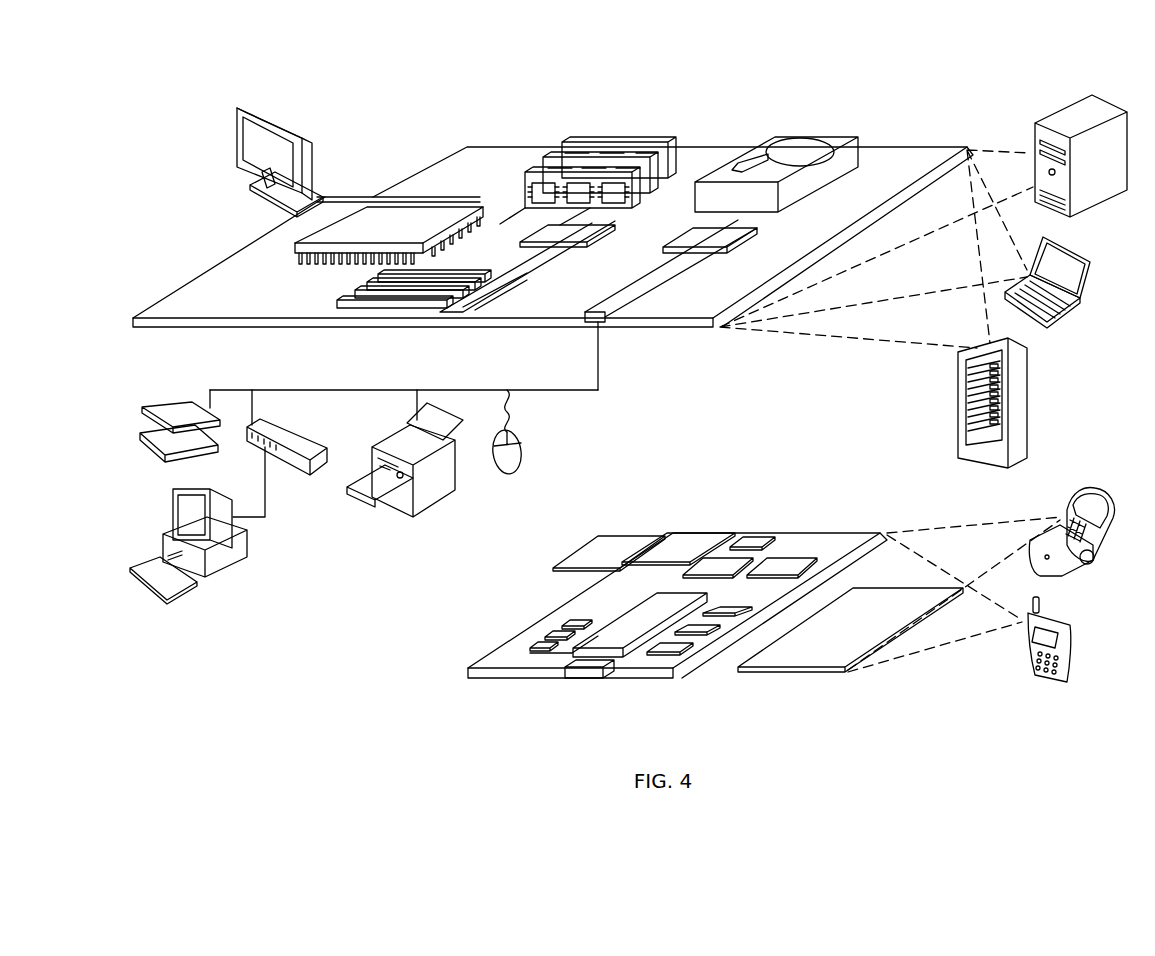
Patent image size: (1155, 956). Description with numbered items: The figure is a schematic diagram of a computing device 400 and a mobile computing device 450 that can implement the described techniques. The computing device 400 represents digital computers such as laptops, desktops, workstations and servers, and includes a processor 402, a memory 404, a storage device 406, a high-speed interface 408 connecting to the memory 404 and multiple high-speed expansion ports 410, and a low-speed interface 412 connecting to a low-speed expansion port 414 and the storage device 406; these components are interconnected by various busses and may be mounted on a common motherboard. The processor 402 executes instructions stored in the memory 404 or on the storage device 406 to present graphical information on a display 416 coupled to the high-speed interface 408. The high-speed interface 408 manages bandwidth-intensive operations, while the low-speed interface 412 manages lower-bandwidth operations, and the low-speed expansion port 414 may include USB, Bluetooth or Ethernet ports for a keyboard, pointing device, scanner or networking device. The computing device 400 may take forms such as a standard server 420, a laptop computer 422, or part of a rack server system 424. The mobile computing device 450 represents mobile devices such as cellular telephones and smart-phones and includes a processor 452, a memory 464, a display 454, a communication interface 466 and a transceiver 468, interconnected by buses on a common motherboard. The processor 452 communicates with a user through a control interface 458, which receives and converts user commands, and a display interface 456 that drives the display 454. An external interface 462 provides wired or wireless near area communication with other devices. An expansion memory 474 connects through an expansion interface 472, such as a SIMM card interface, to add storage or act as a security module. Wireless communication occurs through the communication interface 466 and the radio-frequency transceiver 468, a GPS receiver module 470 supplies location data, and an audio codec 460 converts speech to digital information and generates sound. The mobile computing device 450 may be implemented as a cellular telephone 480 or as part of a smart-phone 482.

The computing device 400 is at (400, 118).
The processor 402 is at (300, 247).
The memory 404 is at (572, 148).
The storage device 406 is at (765, 136).
The high-speed interface 408 is at (547, 232).
The high-speed expansion ports 410 is at (337, 302).
The low-speed interface 412 is at (695, 236).
The low-speed expansion port 414 is at (610, 322).
The display 416 is at (240, 106).
The standard server 420 is at (1036, 130).
The laptop computer 422 is at (1092, 262).
The rack server system 424 is at (958, 422).
The mobile computing device 450 is at (448, 688).
The processor 452 is at (620, 642).
The display 454 is at (818, 658).
The display interface 456 is at (675, 648).
The control interface 458 is at (705, 628).
The audio codec 460 is at (724, 615).
The external interface 462 is at (588, 672).
The memory 464 is at (548, 635).
The communication interface 466 is at (717, 563).
The transceiver 468 is at (783, 563).
The GPS receiver module 470 is at (760, 535).
The expansion interface 472 is at (657, 545).
The expansion memory 474 is at (592, 543).
The cellular telephone 480 is at (1078, 500).
The smart-phone 482 is at (1025, 650).